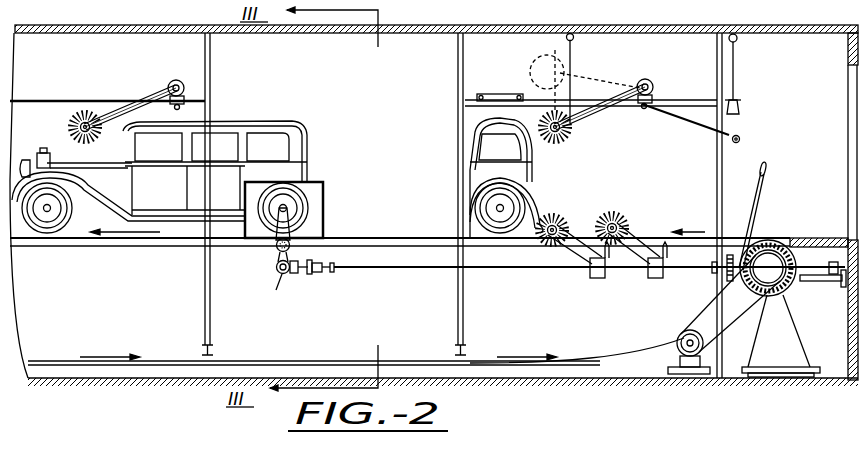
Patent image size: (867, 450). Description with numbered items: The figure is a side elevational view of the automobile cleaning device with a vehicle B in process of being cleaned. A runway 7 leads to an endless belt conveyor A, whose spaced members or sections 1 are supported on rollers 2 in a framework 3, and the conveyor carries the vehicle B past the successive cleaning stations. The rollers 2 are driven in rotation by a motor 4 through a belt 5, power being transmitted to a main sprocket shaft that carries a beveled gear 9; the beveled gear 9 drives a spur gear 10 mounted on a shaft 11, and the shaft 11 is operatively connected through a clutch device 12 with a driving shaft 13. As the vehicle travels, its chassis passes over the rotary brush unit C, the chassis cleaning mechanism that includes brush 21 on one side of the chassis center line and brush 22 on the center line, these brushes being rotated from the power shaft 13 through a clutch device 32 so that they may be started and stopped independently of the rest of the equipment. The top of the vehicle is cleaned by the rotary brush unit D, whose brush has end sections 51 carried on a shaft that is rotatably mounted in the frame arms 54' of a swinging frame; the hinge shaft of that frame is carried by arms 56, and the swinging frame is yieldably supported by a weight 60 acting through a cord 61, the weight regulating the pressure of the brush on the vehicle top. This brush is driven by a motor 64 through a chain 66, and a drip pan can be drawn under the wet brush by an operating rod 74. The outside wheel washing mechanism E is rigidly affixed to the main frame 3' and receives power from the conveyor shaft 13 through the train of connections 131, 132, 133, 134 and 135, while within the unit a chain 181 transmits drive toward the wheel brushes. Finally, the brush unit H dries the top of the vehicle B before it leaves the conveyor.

The spaced members or sections 1 is at (594, 367).
The rollers 2 is at (757, 246).
The framework 3 is at (788, 359).
The main frame 3' is at (447, 285).
The motor 4 is at (677, 341).
The belt 5 is at (705, 344).
The runway 7 is at (832, 240).
The beveled gear 9 is at (794, 290).
The spur gear 10 is at (769, 298).
The shaft 11 is at (757, 284).
The clutch device 12 is at (726, 283).
The driving shaft 13 is at (551, 272).
The brush 21 is at (536, 243).
The brush 22 is at (620, 222).
The clutch device 32 is at (606, 279).
The end sections 51 is at (68, 128).
The frame arms 54' is at (365, 123).
The arms 56 is at (643, 112).
The weight 60 is at (739, 104).
The cord 61 is at (734, 63).
The motor 64 is at (184, 84).
The chain 66 is at (146, 97).
The operating rod 74 is at (740, 137).
The train of connections 131 is at (291, 276).
The train of connections 132 is at (292, 274).
The train of connections 133 is at (279, 280).
The train of connections 134 is at (277, 269).
The source of power 135 is at (277, 249).
The chain 181 is at (292, 236).
The endless belt conveyor A is at (436, 220).
The vehicle B is at (276, 122).
The rotary brush unit C is at (578, 205).
The rotary brush unit D is at (628, 82).
The outside wheel washing mechanism E is at (323, 205).
The brush unit H is at (108, 98).